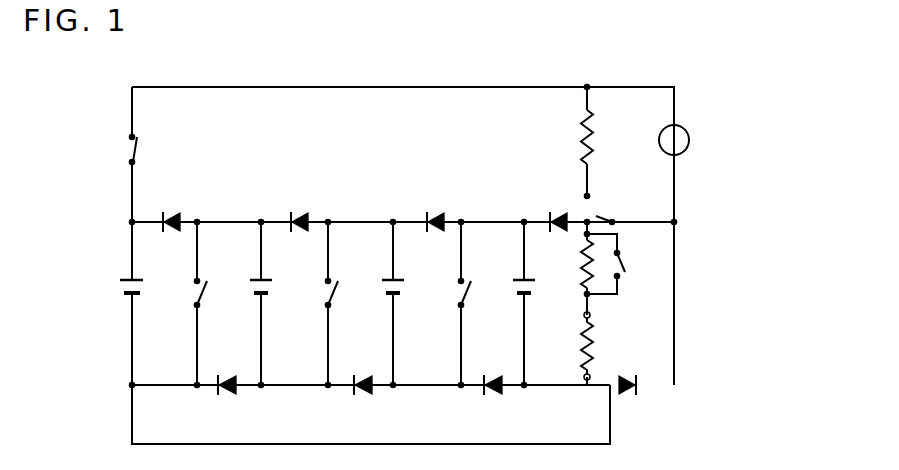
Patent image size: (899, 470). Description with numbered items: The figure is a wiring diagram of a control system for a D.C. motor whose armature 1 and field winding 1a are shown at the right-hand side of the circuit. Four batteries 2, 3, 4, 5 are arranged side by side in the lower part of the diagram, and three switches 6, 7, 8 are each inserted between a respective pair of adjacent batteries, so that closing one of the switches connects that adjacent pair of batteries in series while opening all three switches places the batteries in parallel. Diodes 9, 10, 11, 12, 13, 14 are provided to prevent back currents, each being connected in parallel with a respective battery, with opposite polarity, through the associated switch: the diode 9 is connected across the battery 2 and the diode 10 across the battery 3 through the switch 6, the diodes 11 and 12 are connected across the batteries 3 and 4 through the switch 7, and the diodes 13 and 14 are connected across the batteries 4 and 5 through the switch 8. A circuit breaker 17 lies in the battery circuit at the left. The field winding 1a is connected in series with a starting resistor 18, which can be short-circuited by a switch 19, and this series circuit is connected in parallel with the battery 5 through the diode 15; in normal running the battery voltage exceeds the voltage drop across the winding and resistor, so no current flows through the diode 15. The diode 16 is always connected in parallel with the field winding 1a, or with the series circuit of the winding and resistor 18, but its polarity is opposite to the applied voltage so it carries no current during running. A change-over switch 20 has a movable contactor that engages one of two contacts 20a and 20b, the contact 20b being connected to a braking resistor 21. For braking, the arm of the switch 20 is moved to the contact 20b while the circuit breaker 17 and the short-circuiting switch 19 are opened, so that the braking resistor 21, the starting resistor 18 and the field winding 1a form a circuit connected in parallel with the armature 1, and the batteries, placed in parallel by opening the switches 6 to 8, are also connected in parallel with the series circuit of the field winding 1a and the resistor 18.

The armature 1 is at (684, 151).
The field winding 1a is at (609, 353).
The battery 2 is at (119, 287).
The battery 3 is at (250, 286).
The battery 4 is at (380, 286).
The battery 5 is at (515, 293).
The switch 6 is at (203, 297).
The switch 7 is at (334, 297).
The switch 8 is at (467, 296).
The diode 9 is at (165, 214).
The diode 10 is at (227, 394).
The diode 11 is at (294, 214).
The diode 12 is at (360, 394).
The diode 13 is at (430, 212).
The diode 14 is at (495, 394).
The diode 15 is at (552, 217).
The diode 16 is at (627, 394).
The circuit breaker 17 is at (137, 145).
The starting resistor 18 is at (583, 259).
The switch 19 is at (621, 262).
The change-over switch 20 is at (600, 212).
The contact 20a is at (611, 231).
The contact 20b is at (589, 194).
The braking resistor 21 is at (572, 142).